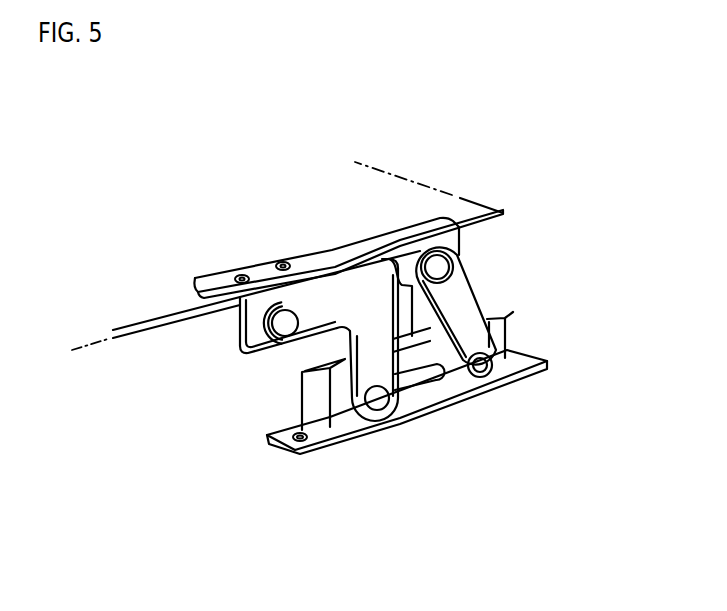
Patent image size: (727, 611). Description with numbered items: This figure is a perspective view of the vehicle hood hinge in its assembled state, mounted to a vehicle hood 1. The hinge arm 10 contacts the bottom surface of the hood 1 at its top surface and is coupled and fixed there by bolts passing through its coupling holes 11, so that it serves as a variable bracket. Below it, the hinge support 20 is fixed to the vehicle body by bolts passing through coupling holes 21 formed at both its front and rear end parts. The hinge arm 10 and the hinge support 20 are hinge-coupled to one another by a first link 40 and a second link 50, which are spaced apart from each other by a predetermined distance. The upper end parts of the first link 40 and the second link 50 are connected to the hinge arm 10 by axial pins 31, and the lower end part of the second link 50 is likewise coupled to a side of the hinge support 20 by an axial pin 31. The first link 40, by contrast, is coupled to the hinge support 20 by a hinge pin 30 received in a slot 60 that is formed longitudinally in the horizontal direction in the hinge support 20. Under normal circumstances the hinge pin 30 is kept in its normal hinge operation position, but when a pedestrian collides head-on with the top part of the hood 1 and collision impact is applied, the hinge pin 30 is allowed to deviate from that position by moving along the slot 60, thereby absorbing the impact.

The hood 1 is at (410, 198).
The hinge arm 10 is at (238, 345).
The coupling holes 11 is at (282, 261).
The hinge support 20 is at (328, 452).
The coupling holes 21 is at (289, 439).
The hinge pin 30 is at (377, 412).
The axial pins 31 is at (455, 256).
The first link 40 is at (347, 328).
The second link 50 is at (459, 313).
The slot 60 is at (431, 384).